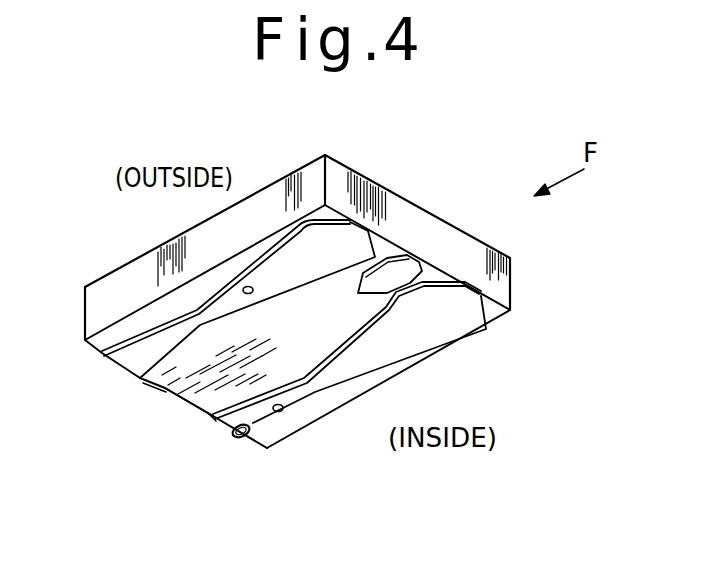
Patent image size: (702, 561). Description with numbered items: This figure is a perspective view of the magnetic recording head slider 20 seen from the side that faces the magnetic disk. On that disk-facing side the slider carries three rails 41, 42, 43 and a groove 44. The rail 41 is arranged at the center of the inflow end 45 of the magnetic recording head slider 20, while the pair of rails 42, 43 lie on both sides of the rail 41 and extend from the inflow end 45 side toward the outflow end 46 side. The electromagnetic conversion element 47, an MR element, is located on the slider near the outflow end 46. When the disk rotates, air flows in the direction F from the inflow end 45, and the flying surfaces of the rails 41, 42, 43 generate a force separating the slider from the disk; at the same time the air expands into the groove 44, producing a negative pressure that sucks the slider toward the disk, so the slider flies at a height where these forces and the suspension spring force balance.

The magnetic recording head slider 20 is at (470, 213).
The rail 41 is at (410, 273).
The rail 42 is at (262, 273).
The rail 43 is at (442, 323).
The groove 44 is at (160, 312).
The inflow end 45 is at (390, 240).
The outflow end 46 is at (200, 416).
The electromagnetic conversion element 47 is at (236, 438).